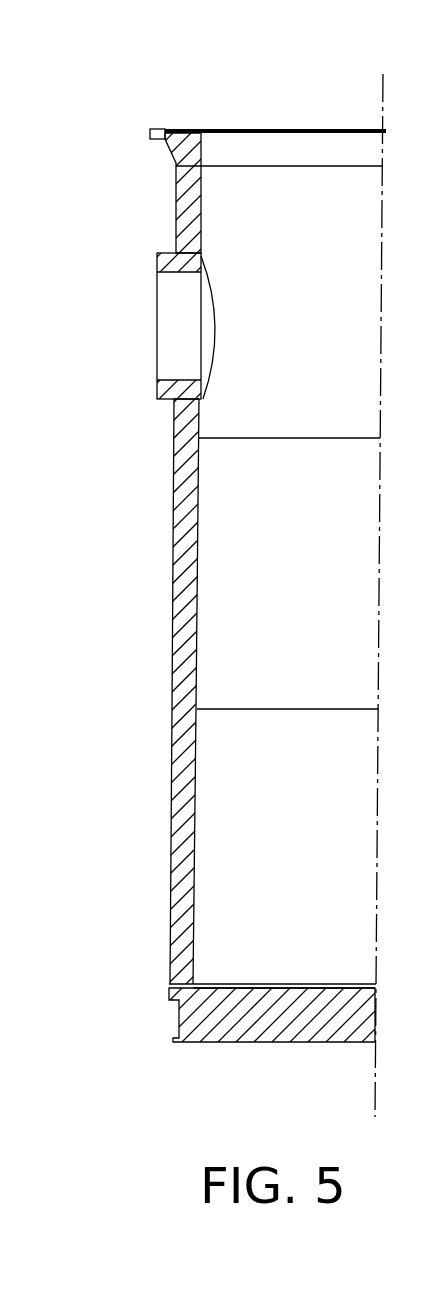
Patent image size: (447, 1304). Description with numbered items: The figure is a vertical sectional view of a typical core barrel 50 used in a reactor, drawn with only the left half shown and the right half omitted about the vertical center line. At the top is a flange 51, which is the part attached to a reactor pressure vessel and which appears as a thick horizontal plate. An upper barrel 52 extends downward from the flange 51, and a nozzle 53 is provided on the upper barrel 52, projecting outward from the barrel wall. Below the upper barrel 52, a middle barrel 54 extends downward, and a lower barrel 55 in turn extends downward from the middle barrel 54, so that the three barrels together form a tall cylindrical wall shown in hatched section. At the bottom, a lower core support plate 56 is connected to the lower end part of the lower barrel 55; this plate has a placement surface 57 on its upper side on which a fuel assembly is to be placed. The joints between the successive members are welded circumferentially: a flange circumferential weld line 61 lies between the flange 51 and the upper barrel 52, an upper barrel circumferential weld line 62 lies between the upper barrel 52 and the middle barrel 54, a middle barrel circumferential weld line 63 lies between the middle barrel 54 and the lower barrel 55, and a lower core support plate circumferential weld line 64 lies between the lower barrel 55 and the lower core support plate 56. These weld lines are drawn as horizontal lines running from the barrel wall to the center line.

The core barrel 50 is at (149, 97).
The flange 51 is at (150, 133).
The upper barrel 52 is at (176, 218).
The nozzle 53 is at (157, 380).
The middle barrel 54 is at (174, 600).
The lower barrel 55 is at (170, 905).
The lower core support plate 56 is at (238, 1043).
The placement surface 57 is at (310, 985).
The flange circumferential weld line 61 is at (176, 166).
The upper barrel circumferential weld line 62 is at (174, 438).
The middle barrel circumferential weld line 63 is at (174, 709).
The lower core support plate circumferential weld line 64 is at (170, 988).